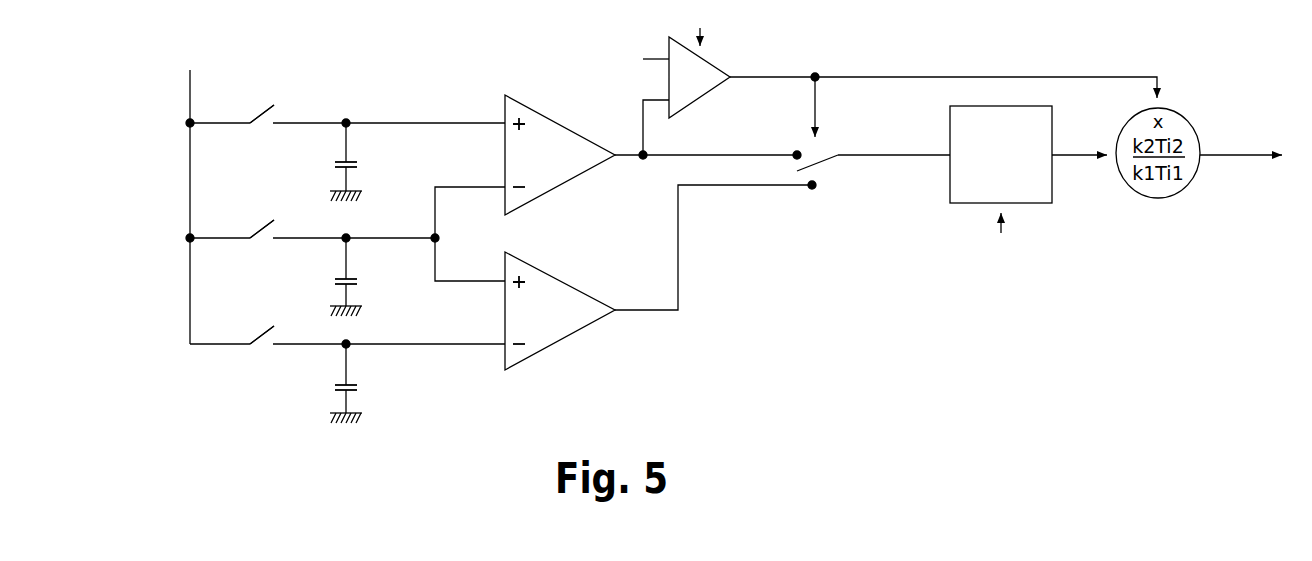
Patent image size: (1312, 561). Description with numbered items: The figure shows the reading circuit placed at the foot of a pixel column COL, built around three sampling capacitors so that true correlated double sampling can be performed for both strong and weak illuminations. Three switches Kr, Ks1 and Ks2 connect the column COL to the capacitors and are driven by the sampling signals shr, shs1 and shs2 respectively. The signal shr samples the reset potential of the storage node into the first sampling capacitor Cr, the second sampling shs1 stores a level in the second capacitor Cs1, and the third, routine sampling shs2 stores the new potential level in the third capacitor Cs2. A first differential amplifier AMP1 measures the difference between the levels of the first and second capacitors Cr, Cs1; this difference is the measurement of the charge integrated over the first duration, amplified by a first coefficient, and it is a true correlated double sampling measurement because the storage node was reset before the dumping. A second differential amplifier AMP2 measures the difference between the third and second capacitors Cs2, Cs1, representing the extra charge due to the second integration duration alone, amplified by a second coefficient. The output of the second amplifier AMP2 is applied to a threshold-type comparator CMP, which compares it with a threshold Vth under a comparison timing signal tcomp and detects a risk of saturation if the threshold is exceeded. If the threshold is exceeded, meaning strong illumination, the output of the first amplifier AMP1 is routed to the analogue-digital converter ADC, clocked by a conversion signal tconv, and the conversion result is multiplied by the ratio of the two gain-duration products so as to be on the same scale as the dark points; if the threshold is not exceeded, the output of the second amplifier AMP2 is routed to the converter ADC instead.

The column line COL is at (163, 207).
The sample switch 2 Ks2 is at (345, 132).
The third sampling signal shs2 is at (241, 105).
The third sampling capacitor Cs2 is at (369, 160).
The sample switch 1 Ks1 is at (312, 247).
The second sampling signal shs1 is at (241, 225).
The second sampling capacitor Cs1 is at (369, 275).
The reset sample switch Kr is at (347, 351).
The first sampling signal shr is at (251, 326).
The first sampling capacitor Cr is at (334, 381).
The second differential amplifier AMP2 is at (616, 166).
The first differential amplifier AMP1 is at (625, 275).
The comparator CMP is at (913, 87).
The threshold voltage Vth is at (631, 55).
The comparison timing signal tcomp is at (710, 23).
The analog-to-digital converter ADC is at (1028, 154).
The conversion timing signal tconv is at (1009, 239).